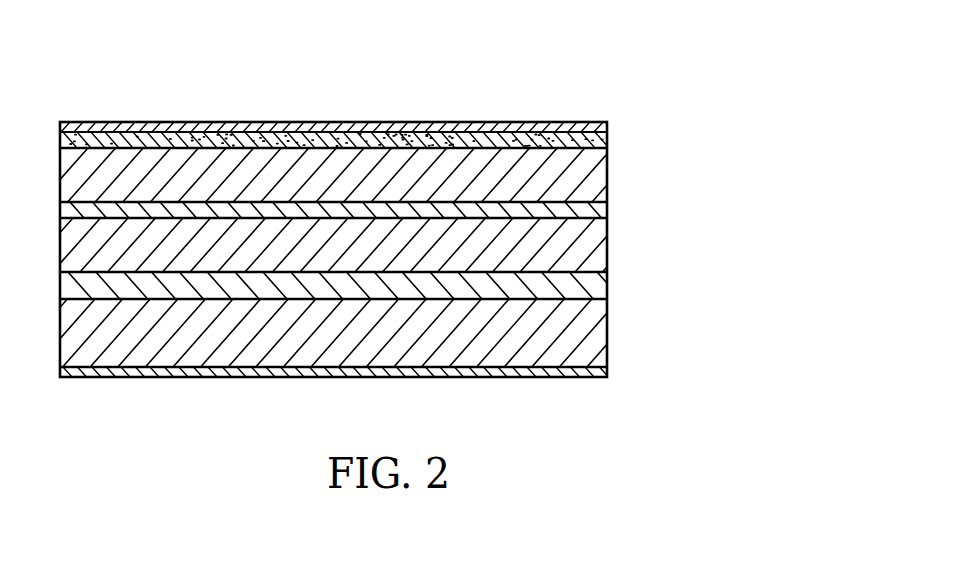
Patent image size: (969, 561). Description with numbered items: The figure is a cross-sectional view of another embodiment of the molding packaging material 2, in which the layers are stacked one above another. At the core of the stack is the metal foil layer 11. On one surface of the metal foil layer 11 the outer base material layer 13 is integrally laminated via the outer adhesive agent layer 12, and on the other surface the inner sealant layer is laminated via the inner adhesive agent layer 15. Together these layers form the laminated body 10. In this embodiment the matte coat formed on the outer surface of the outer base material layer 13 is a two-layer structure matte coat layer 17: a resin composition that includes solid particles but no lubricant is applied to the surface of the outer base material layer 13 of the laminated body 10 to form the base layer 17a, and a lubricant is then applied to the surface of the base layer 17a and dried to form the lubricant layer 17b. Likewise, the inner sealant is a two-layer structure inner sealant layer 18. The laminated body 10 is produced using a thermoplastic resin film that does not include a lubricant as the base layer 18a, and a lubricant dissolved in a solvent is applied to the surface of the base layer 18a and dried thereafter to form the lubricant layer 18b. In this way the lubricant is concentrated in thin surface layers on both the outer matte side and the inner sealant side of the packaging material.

The molding packaging material 2 is at (122, 97).
The laminated body 10 is at (408, 283).
The metal foil layer 11 is at (587, 244).
The outer adhesive agent layer 12 is at (597, 212).
The outer base material layer 13 is at (595, 179).
The inner adhesive agent layer 15 is at (588, 282).
The two-layer structure matte coat layer 17 is at (418, 96).
The base layer 17a is at (608, 138).
The lubricant layer 17b is at (608, 125).
The two-layer structure inner sealant layer 18 is at (391, 358).
The base layer 18a is at (587, 328).
The lubricant layer 18b is at (607, 373).